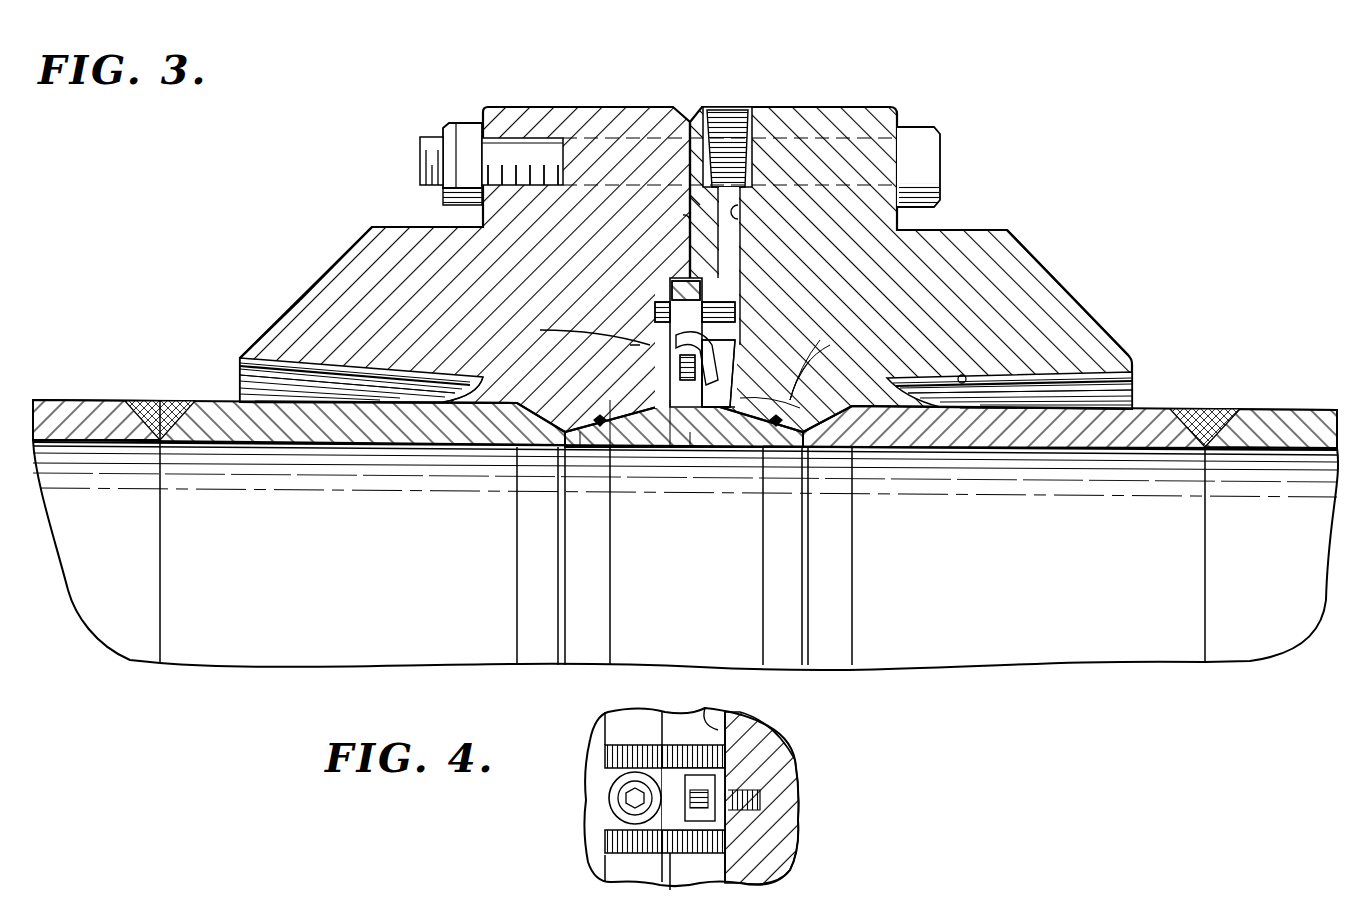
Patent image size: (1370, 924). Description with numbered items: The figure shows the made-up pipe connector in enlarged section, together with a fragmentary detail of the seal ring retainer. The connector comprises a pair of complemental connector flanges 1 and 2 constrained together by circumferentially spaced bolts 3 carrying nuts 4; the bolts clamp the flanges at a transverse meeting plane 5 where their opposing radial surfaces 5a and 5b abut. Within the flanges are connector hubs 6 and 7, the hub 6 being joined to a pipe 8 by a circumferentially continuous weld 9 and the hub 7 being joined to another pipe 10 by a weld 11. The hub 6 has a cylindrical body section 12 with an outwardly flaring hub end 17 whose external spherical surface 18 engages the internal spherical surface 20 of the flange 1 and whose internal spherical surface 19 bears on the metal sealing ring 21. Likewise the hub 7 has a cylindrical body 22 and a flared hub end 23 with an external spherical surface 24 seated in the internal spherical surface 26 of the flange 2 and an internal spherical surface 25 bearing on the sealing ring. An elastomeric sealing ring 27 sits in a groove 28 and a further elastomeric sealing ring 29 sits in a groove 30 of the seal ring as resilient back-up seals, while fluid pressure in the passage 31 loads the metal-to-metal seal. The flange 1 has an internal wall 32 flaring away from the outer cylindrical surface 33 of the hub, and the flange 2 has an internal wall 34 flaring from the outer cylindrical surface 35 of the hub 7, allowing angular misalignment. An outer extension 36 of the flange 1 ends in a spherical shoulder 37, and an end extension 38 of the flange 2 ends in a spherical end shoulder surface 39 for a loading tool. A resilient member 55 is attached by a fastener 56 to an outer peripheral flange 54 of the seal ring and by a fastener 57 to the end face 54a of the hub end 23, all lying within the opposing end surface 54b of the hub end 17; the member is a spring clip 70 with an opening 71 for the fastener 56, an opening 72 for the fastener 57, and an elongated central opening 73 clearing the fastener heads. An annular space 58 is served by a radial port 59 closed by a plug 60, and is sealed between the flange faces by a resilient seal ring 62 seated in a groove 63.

In FIG. 3, the connector flange 1 is at (352, 243).
In FIG. 3, the connector flange 2 is at (1022, 244).
In FIG. 3, the bolt 3 is at (518, 145).
In FIG. 3, the nut 4 is at (452, 122).
In FIG. 3, the transverse meeting plane 5 is at (676, 125).
In FIG. 3, the radial surface 5a is at (688, 218).
In FIG. 3, the radial surface 5b is at (690, 198).
In FIG. 3, the connector hub 6 is at (336, 450).
In FIG. 3, the connector hub 7 is at (1052, 452).
In FIG. 3, the pipe 8 is at (55, 400).
In FIG. 3, the weld 9 is at (152, 400).
In FIG. 3, the pipe 10 is at (1300, 410).
In FIG. 3, the weld 11 is at (1205, 420).
In FIG. 3, the cylindrical body section 12 is at (242, 425).
In FIG. 3, the hub end 17 is at (560, 328).
In FIG. 3, the external spherical surface 18 is at (542, 400).
In FIG. 3, the internal spherical surface 19 is at (592, 424).
In FIG. 3, the internal spherical surface 20 is at (508, 342).
In FIG. 3, the metal sealing ring 21 is at (684, 440).
In FIG. 3, the cylindrical body 22 is at (982, 430).
In FIG. 3, the hub end 23 is at (812, 356).
In FIG. 4, the hub end 23 is at (790, 798).
In FIG. 3, the external spherical surface 24 is at (812, 362).
In FIG. 3, the internal spherical surface 25 is at (820, 432).
In FIG. 3, the internal spherical surface 26 is at (832, 344).
In FIG. 3, the elastomeric sealing ring 27 is at (632, 347).
In FIG. 3, the groove 28 is at (602, 425).
In FIG. 3, the elastomeric sealing ring 29 is at (790, 408).
In FIG. 3, the groove 30 is at (776, 428).
In FIG. 3, the passage 31 is at (700, 631).
In FIG. 3, the internal wall 32 is at (300, 372).
In FIG. 3, the outer cylindrical surface 33 is at (398, 400).
In FIG. 3, the internal wall 34 is at (964, 374).
In FIG. 3, the outer cylindrical surface 35 is at (1092, 395).
In FIG. 3, the outer extension 36 is at (340, 278).
In FIG. 3, the shoulder 37 is at (278, 312).
In FIG. 3, the end extension 38 is at (1075, 302).
In FIG. 3, the end shoulder surface 39 is at (1055, 260).
In FIG. 3, the outer peripheral flange 54 is at (684, 422).
In FIG. 4, the outer peripheral flange 54 is at (625, 720).
In FIG. 3, the end face 54a is at (732, 368).
In FIG. 4, the end face 54a is at (720, 716).
In FIG. 3, the end surface 54b is at (660, 430).
In FIG. 3, the resilient member 55 is at (702, 312).
In FIG. 4, the resilient member 55 is at (682, 742).
In FIG. 3, the fastener 56 is at (690, 382).
In FIG. 4, the fastener 56 is at (618, 808).
In FIG. 3, the fastener 57 is at (748, 345).
In FIG. 4, the fastener 57 is at (706, 858).
In FIG. 3, the annular space 58 is at (678, 308).
In FIG. 3, the radial port 59 is at (748, 213).
In FIG. 3, the plug 60 is at (737, 108).
In FIG. 3, the resilient seal ring 62 is at (670, 300).
In FIG. 3, the groove 63 is at (720, 300).
In FIG. 4, the spring clip 70 is at (625, 745).
In FIG. 4, the opening 71 is at (625, 797).
In FIG. 4, the opening 72 is at (733, 790).
In FIG. 4, the elongated central opening 73 is at (668, 872).